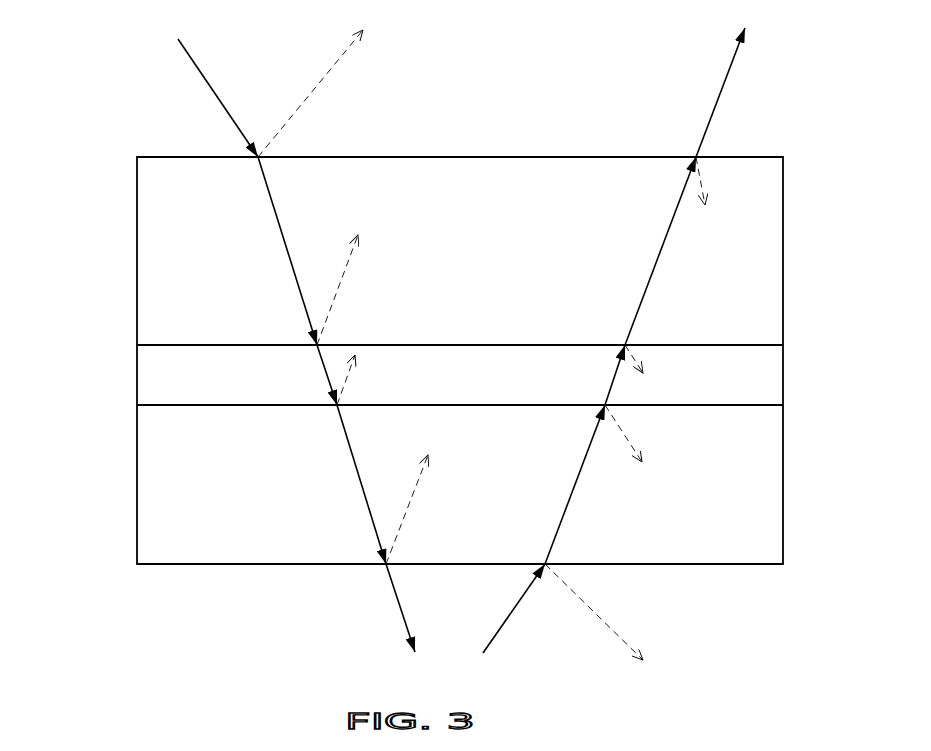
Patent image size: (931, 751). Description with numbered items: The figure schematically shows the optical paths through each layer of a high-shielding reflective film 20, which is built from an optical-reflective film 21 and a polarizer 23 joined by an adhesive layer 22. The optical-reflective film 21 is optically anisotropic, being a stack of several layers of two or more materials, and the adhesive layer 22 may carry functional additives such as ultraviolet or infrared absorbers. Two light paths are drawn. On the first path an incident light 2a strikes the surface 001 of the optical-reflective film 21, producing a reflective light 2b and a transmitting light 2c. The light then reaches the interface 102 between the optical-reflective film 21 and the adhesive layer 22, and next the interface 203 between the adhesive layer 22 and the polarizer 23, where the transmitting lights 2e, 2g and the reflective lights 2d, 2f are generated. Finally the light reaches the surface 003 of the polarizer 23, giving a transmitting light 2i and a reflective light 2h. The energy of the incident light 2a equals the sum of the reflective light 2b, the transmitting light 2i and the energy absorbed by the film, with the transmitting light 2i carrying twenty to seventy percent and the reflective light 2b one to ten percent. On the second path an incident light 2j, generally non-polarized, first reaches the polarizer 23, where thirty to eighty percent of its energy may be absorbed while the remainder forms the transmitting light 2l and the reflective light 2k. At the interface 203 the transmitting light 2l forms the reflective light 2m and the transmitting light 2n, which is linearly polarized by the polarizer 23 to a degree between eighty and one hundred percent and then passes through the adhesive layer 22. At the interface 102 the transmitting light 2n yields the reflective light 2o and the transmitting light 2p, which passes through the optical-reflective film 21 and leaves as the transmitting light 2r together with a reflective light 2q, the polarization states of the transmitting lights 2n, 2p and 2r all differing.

The high-shielding reflective film 20 is at (82, 157).
The optical-reflective film 21 is at (508, 260).
The adhesive layer 22 is at (508, 384).
The polarizer 23 is at (508, 495).
The surface of optical-reflective film 001 is at (148, 157).
The interface between the adhesive layer and the optical-reflective film 102 is at (148, 345).
The interface between the polarizer and the adhesive layer 203 is at (148, 406).
The surface of polarizer 003 is at (148, 565).
The incident light 2a is at (218, 98).
The reflective light 2b is at (310, 93).
The transmitting light 2c is at (286, 251).
The reflective light 2d is at (344, 290).
The transmitting light 2e is at (315, 375).
The reflective light 2f is at (358, 380).
The transmitting light 2g is at (357, 484).
The reflective light 2h is at (412, 509).
The transmitting light 2i is at (392, 608).
The incident light 2j is at (514, 608).
The reflective light 2k is at (594, 612).
The transmitting light 2l is at (575, 484).
The reflective light 2m is at (637, 433).
The transmitting light 2n is at (602, 375).
The reflective light 2o is at (649, 360).
The transmitting light 2p is at (660, 251).
The reflective light 2q is at (716, 181).
The transmitting light 2r is at (717, 92).